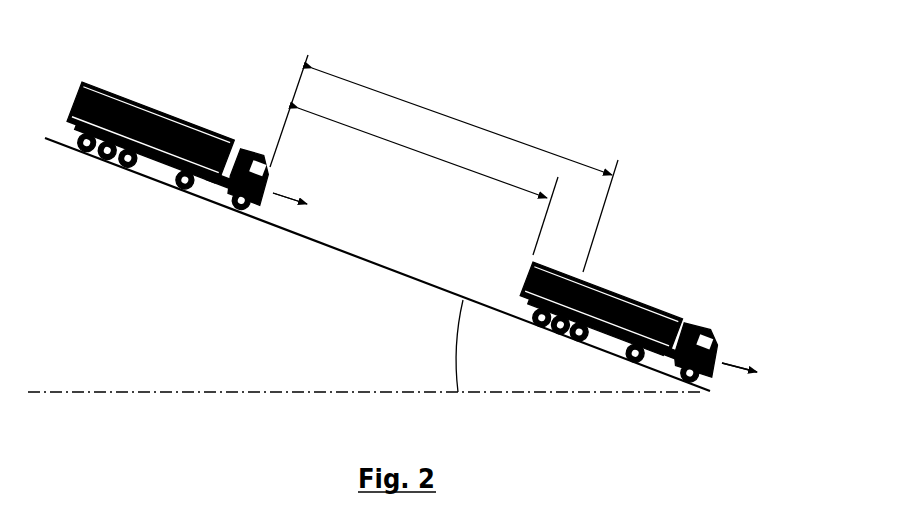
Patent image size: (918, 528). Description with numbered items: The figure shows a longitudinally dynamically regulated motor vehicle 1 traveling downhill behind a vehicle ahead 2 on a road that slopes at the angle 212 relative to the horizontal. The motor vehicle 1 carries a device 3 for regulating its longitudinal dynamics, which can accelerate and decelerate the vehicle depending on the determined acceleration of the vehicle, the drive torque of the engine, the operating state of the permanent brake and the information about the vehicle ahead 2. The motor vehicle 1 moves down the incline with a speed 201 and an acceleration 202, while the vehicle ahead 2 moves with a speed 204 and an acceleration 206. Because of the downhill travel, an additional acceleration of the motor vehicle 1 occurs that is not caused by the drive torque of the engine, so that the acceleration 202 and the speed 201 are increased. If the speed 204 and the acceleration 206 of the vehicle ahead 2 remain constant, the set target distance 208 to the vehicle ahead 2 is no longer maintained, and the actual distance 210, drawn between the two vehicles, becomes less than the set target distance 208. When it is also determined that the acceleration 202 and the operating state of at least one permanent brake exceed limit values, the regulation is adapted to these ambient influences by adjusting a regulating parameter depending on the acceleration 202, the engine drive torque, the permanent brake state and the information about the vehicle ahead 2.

The motor vehicle 1 is at (165, 112).
The vehicle ahead 2 is at (595, 277).
The device for regulating the longitudinal dynamics 3 is at (220, 187).
The speed 201 is at (288, 200).
The acceleration 202 is at (290, 198).
The speed 204 is at (727, 362).
The acceleration 206 is at (739, 367).
The target distance 208 is at (378, 91).
The actual distance 210 is at (475, 173).
The angle 212 is at (453, 348).